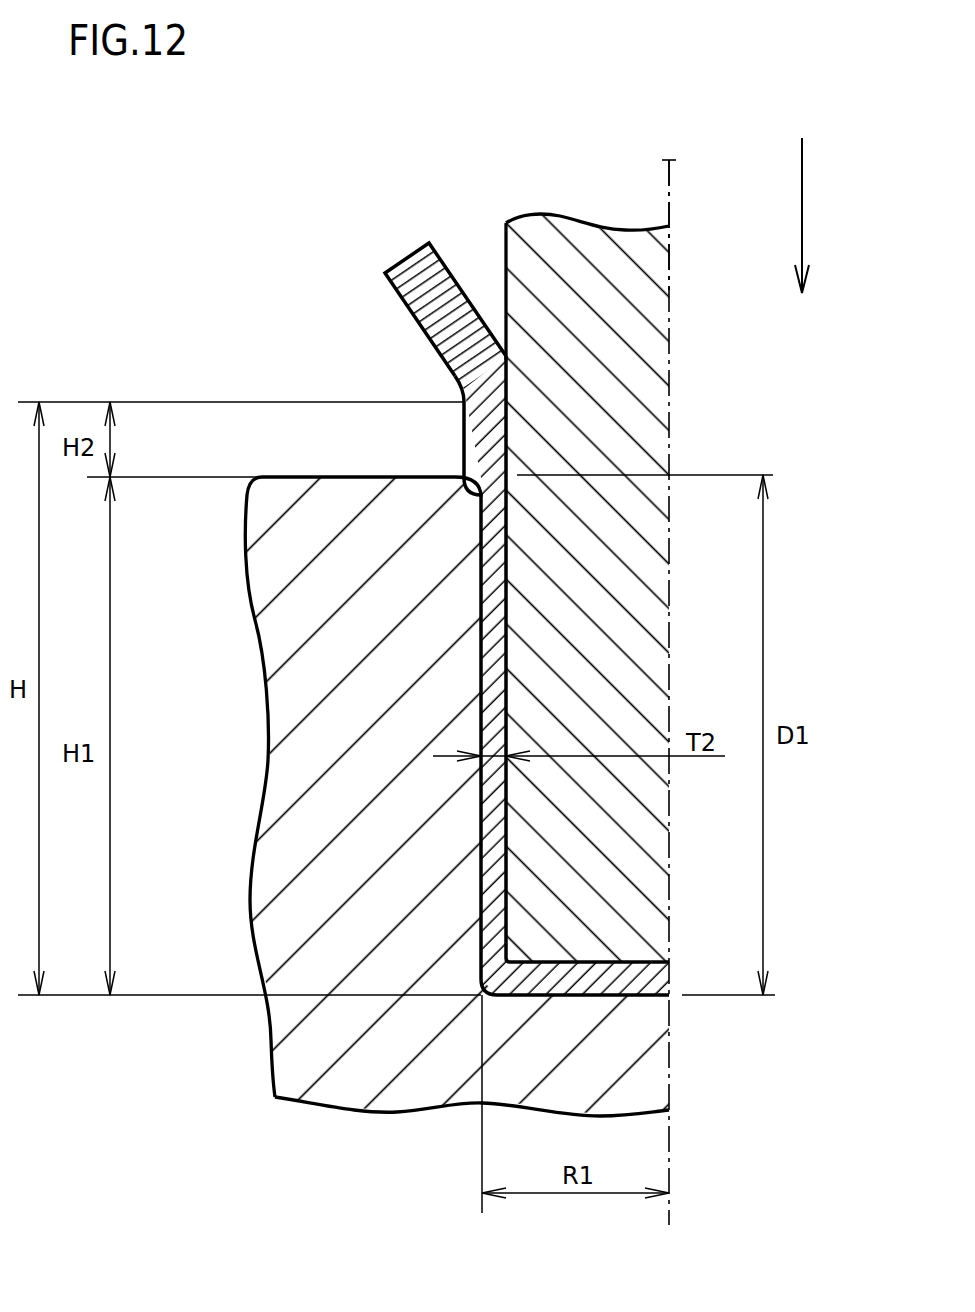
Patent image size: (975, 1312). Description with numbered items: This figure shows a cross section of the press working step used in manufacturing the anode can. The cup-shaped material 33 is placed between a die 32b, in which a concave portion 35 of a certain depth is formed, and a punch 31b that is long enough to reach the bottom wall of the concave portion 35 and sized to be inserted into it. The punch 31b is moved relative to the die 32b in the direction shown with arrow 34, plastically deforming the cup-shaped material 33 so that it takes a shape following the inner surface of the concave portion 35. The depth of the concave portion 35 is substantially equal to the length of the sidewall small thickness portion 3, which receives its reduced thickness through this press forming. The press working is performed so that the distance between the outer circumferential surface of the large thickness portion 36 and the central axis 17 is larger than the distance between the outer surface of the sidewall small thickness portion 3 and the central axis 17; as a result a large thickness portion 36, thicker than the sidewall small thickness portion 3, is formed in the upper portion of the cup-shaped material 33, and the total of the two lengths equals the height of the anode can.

The sidewall small thickness portion 3 is at (490, 703).
The central axis 17 is at (672, 170).
The punch 31b is at (616, 310).
The die 32b is at (340, 630).
The cup-shaped material 33 is at (414, 267).
The arrow 34 is at (803, 198).
The concave portion 35 is at (486, 870).
The large thickness portion 36 is at (485, 413).